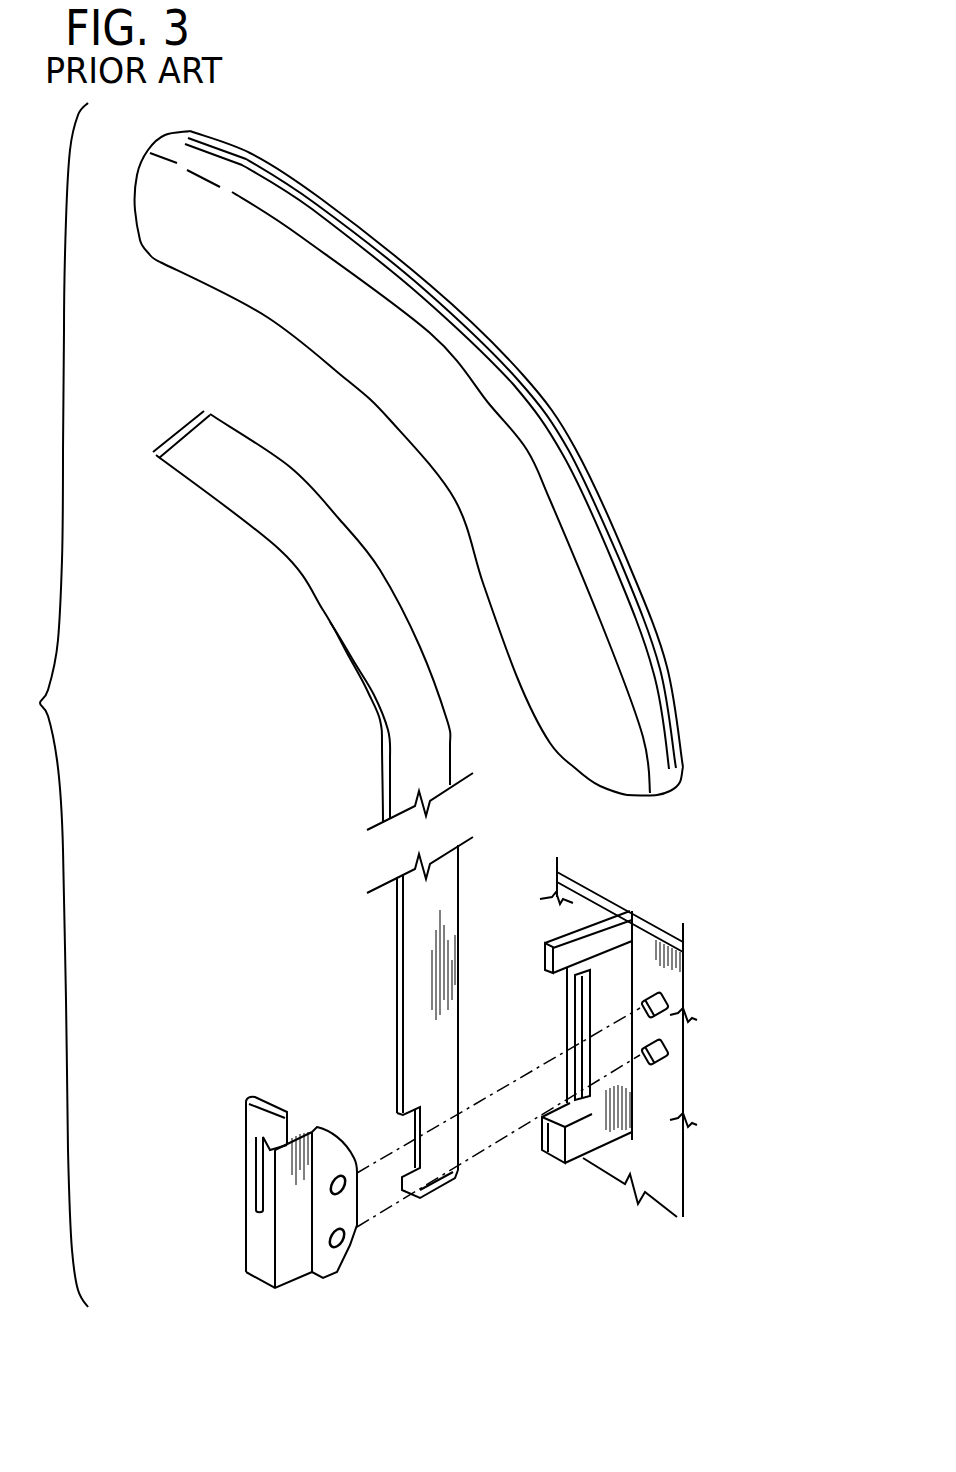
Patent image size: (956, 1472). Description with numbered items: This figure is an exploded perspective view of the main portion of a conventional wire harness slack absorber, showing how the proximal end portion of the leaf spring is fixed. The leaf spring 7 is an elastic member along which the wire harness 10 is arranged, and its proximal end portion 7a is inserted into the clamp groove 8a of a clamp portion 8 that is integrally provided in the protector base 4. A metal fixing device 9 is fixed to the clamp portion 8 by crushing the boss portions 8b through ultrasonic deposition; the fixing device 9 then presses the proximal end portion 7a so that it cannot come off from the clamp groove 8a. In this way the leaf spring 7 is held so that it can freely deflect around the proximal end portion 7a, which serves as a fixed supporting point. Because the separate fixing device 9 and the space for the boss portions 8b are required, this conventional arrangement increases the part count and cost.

The wire harness 10 is at (547, 442).
The leaf spring 7 is at (346, 849).
The proximal end portion 7a is at (445, 1147).
The clamp portion 8 is at (597, 1004).
The clamp groove 8a is at (573, 1004).
The boss portions 8b is at (667, 1003).
The metal fixing device 9 is at (257, 1255).
The protector base 4 is at (665, 1153).